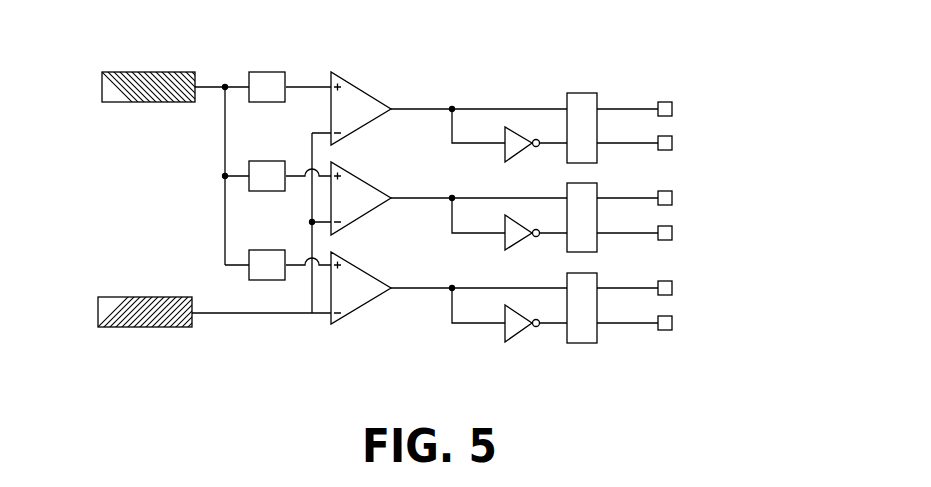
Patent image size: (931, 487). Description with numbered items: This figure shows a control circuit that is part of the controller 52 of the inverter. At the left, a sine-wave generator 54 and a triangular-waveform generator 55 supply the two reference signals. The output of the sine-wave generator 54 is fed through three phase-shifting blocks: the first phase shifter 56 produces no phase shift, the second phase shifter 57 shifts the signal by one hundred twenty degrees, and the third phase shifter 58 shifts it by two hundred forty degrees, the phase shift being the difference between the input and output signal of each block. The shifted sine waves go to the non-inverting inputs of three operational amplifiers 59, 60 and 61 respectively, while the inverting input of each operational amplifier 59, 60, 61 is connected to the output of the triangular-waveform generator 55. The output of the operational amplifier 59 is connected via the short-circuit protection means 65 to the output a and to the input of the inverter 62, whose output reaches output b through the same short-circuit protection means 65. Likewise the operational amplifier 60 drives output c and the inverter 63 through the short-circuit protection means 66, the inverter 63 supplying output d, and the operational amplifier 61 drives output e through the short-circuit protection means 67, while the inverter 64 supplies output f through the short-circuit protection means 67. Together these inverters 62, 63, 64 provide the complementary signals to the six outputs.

The controller 52 is at (675, 61).
The sine-wave generator 54 is at (102, 90).
The triangular-waveform generator 55 is at (98, 313).
The first phase shifter 56 is at (267, 72).
The second phase shifter 57 is at (266, 161).
The third phase shifter 58 is at (263, 250).
The operational amplifier 59 is at (368, 92).
The operational amplifier 60 is at (368, 181).
The operational amplifier 61 is at (368, 271).
The inverter 62 is at (505, 155).
The inverter 63 is at (505, 245).
The inverter 64 is at (505, 335).
The short-circuit protection means 65 is at (588, 93).
The short-circuit protection means 66 is at (598, 185).
The short-circuit protection means 67 is at (598, 275).